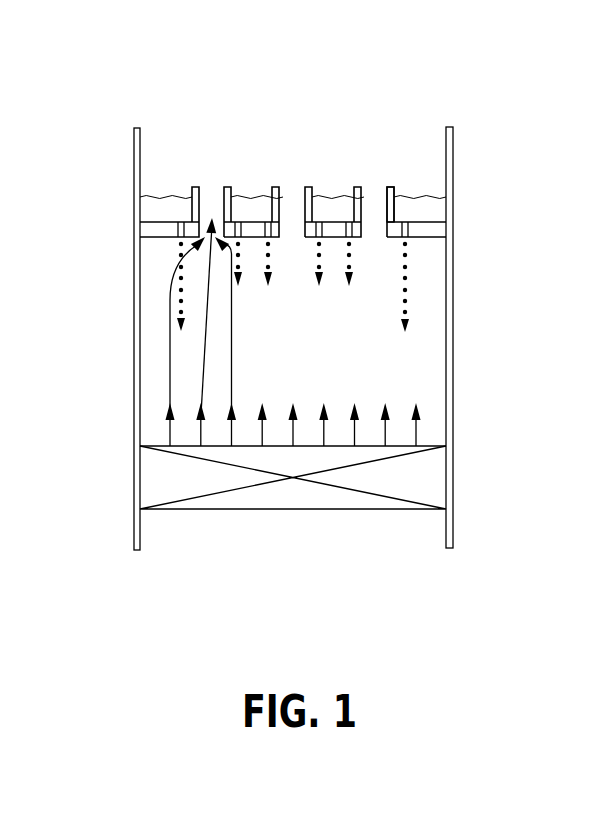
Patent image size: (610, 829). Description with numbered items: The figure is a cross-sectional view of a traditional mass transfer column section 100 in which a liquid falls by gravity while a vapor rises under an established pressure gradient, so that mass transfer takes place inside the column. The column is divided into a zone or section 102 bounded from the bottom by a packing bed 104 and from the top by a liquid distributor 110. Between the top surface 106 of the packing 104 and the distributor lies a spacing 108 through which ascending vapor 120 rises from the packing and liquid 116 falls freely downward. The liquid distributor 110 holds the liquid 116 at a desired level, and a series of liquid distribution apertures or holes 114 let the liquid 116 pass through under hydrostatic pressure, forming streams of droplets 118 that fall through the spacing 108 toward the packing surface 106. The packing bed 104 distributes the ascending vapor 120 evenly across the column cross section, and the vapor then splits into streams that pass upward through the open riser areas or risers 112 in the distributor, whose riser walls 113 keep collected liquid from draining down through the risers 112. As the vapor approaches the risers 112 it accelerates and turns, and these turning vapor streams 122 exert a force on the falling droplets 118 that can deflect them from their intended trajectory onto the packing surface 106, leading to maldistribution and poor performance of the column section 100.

The mass transfer column section 100 is at (462, 78).
The zone or section 102 is at (453, 132).
The packing bed 104 is at (425, 473).
The top surface of the packing 106 is at (427, 443).
The spacing 108 is at (417, 358).
The liquid distributor 110 is at (422, 222).
The risers 112 is at (372, 213).
The riser walls 113 is at (392, 185).
The liquid distribution apertures or holes 114 is at (407, 229).
The liquid 116 is at (153, 212).
The streams of droplets 118 is at (177, 302).
The ascending vapor 120 is at (417, 420).
The turning vapor streams 122 is at (230, 283).